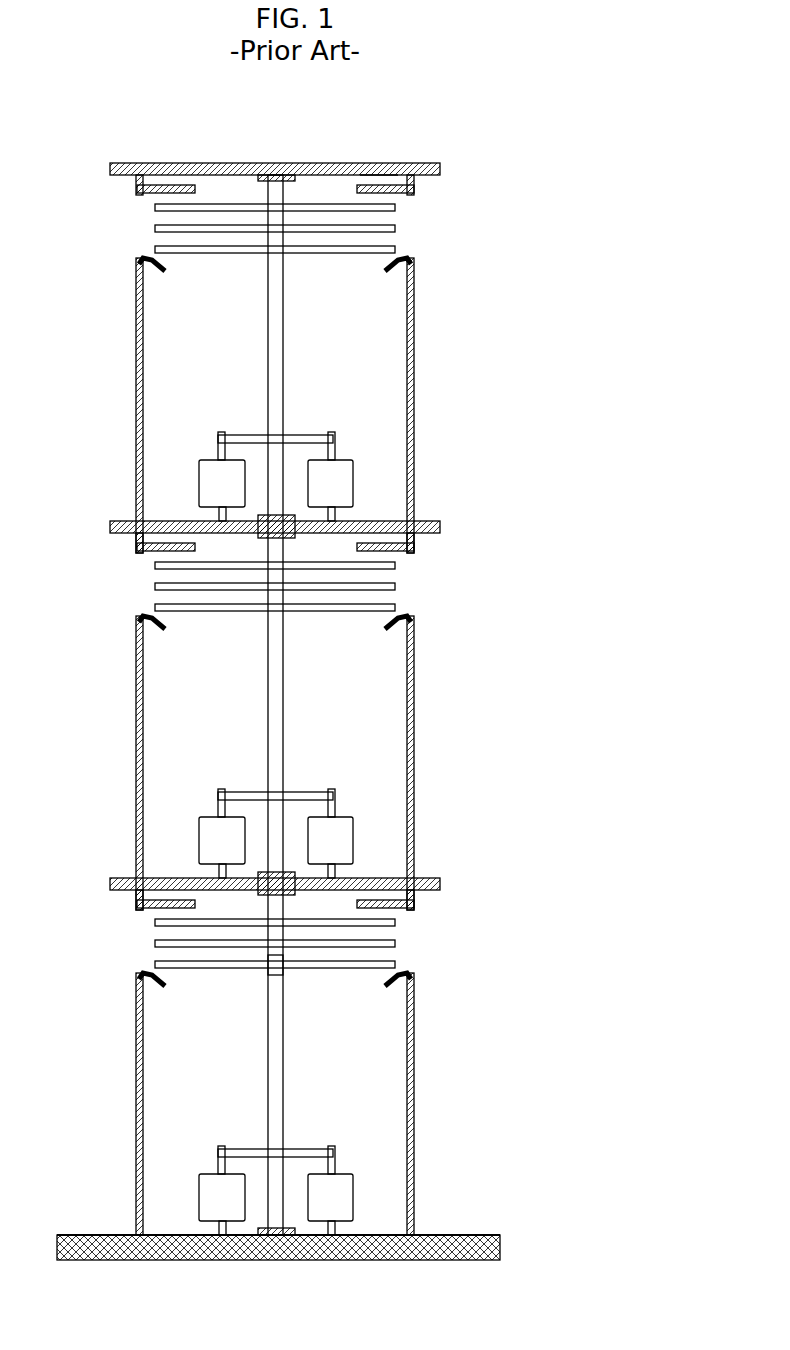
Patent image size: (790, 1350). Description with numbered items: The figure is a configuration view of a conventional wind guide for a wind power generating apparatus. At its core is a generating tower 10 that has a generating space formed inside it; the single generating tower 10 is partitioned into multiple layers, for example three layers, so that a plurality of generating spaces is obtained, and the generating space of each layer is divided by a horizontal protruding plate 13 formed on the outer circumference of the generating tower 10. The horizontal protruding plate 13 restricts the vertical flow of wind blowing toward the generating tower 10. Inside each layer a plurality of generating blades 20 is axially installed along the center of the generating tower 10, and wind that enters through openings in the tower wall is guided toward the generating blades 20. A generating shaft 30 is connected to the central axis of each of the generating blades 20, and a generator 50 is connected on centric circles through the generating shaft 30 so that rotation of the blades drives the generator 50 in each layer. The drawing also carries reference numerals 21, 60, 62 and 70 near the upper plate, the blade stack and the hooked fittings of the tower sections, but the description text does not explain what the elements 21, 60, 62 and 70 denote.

The generating tower 10 is at (470, 653).
The horizontal protruding plate 13 is at (440, 168).
The generating blades 20 is at (396, 208).
The shaft hole in disc plate 21 is at (293, 972).
The generating shaft 30 is at (284, 1055).
The generator 50 is at (354, 485).
The upper cover plate 60 is at (372, 172).
The cylinder top hook lip 62 is at (416, 270).
The fastening hook 70 is at (416, 186).